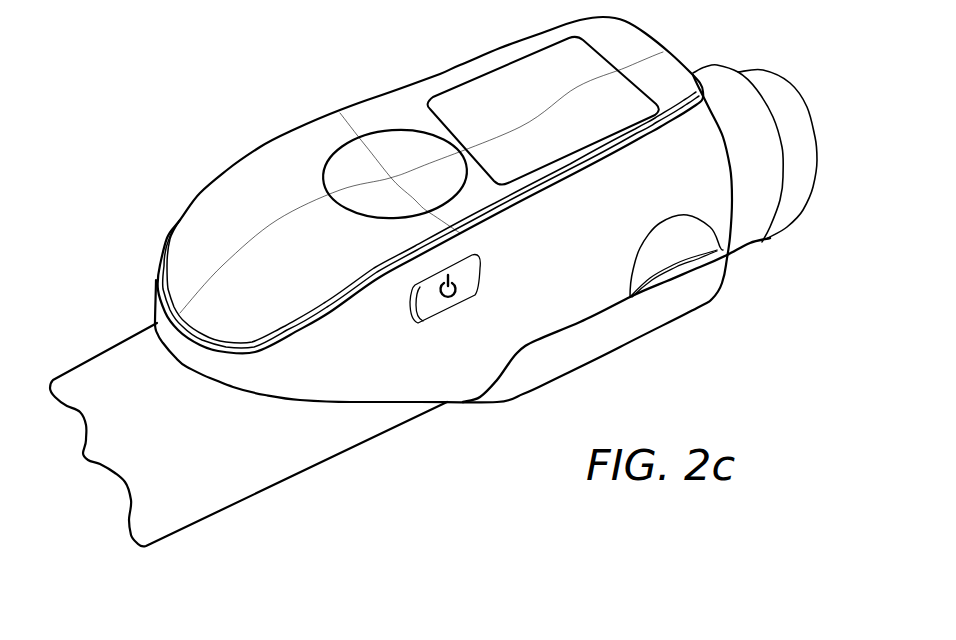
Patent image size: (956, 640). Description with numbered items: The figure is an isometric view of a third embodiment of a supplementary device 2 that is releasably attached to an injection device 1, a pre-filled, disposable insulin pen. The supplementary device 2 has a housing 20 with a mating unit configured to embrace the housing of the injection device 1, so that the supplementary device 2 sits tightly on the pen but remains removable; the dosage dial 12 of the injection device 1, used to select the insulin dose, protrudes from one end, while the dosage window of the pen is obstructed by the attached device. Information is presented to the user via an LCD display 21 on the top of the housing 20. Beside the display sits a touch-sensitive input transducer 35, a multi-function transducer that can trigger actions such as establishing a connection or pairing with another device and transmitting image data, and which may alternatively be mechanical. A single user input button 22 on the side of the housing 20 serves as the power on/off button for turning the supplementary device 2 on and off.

The injection device 1 is at (108, 346).
The supplementary device 2 is at (306, 118).
The dosage dial 12 is at (758, 75).
The housing 20 is at (713, 185).
The LCD display 21 is at (460, 94).
The user input button or switch 22 is at (453, 297).
The touch-sensitive input transducer 35 is at (382, 142).